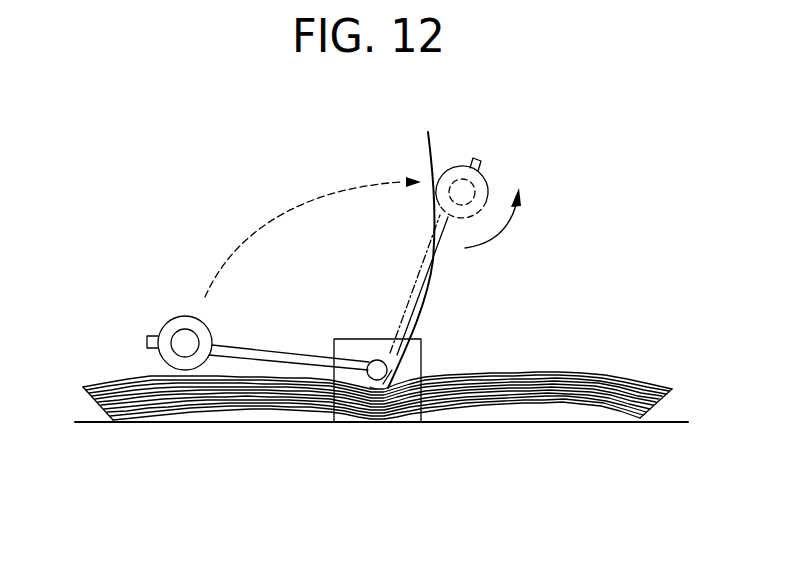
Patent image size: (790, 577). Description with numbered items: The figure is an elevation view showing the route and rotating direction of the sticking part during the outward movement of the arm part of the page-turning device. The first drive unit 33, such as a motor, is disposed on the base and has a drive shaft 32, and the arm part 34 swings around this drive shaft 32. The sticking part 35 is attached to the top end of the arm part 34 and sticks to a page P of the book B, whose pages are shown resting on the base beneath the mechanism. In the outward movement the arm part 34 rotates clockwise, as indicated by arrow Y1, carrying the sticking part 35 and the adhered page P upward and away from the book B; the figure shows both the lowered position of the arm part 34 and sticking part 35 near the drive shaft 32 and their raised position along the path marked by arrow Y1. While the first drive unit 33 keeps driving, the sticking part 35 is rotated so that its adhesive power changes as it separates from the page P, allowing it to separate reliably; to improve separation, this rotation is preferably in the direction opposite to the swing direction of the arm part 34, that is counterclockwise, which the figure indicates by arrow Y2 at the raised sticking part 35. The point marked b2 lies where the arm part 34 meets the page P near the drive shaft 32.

The drive shaft 32 is at (375, 359).
The first drive unit 33 is at (422, 351).
The arm part 34 is at (258, 348).
The sticking part 35 is at (162, 321).
The page P is at (98, 384).
The book B is at (238, 424).
The contact point b2 is at (370, 387).
The arrow Y1 is at (301, 177).
The rotation direction Y2 is at (506, 219).